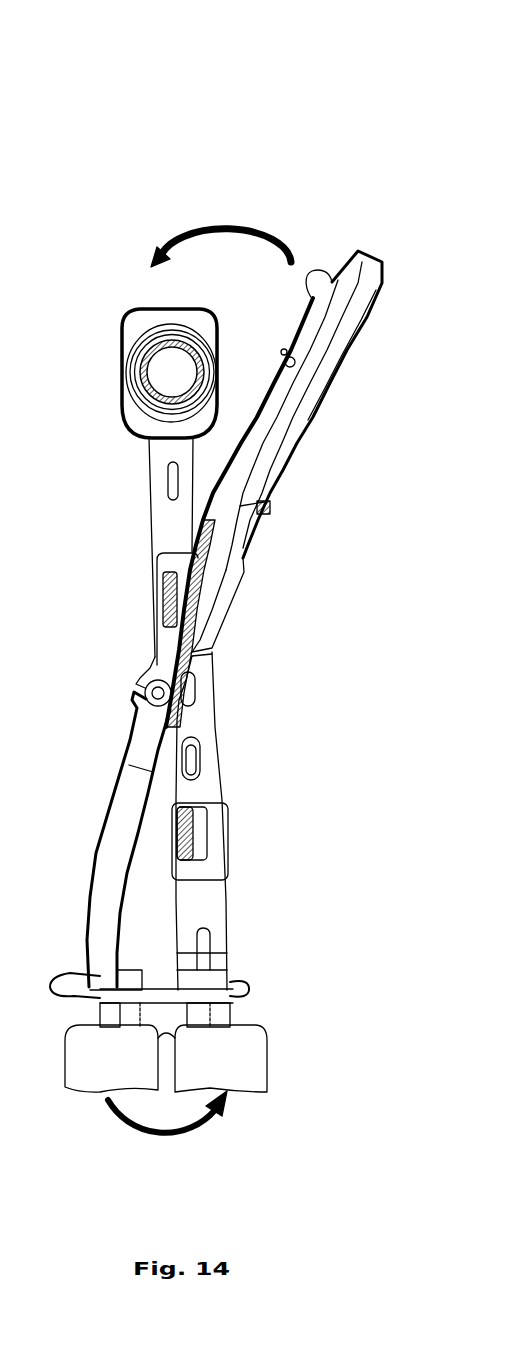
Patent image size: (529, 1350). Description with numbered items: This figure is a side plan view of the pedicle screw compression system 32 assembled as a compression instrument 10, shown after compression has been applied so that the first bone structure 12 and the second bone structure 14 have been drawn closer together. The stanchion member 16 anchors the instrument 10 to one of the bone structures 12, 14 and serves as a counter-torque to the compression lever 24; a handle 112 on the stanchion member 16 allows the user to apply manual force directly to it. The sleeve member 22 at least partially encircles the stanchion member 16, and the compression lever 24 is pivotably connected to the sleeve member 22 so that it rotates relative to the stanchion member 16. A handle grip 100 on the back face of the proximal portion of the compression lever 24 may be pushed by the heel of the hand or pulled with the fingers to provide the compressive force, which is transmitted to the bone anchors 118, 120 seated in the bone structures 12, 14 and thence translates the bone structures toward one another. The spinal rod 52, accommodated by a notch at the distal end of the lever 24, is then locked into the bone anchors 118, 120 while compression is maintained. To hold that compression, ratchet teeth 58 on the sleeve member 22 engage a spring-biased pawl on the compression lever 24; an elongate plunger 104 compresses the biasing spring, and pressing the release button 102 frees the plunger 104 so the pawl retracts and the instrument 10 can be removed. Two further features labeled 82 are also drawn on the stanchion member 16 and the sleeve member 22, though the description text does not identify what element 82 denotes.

The compression instrument 10 is at (197, 182).
The first bone structure 12 is at (255, 1082).
The second bone structure 14 is at (78, 1075).
The stanchion member 16 is at (96, 487).
The sleeve member 22 is at (208, 722).
The compression lever 24 is at (349, 400).
The spinal compression system 32 is at (316, 112).
The spinal rod 52 is at (167, 990).
The ratchet teeth 58 is at (246, 568).
The latch housing 82 is at (170, 590).
The handle grip 100 is at (298, 440).
The release button 102 is at (330, 273).
The elongate plunger 104 is at (234, 557).
The handle 112 is at (125, 353).
The first bone anchor 118 is at (218, 1015).
The second bone anchor 120 is at (110, 1017).